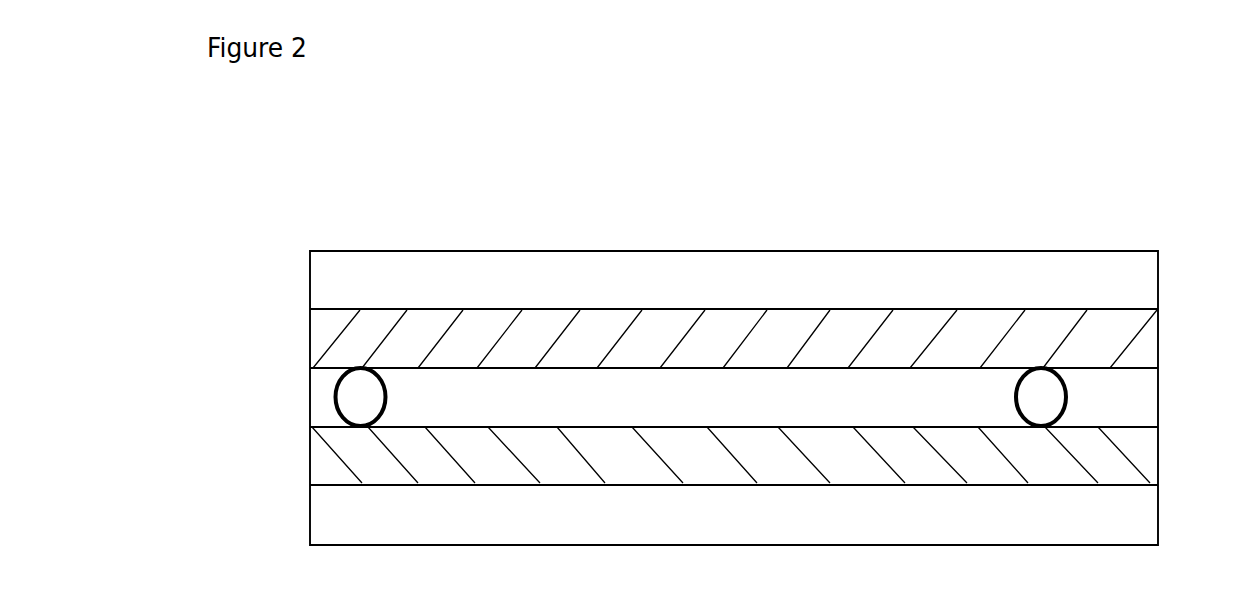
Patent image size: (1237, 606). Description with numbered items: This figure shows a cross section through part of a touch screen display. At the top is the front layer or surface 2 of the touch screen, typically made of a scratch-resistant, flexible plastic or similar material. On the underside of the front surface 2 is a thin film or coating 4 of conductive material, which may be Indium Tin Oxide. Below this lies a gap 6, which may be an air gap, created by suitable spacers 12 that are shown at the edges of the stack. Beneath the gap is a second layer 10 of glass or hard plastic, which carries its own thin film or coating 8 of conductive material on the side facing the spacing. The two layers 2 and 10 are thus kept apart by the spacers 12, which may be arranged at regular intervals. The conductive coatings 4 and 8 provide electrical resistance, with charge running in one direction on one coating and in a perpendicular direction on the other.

The front layer 2 is at (1135, 282).
The thin film or coating of conductive material 4 is at (1142, 353).
The gap 6 is at (1142, 400).
The thin film or coating of conductive material 8 is at (1142, 458).
The second layer 10 is at (1142, 517).
The spacers 12 is at (334, 397).